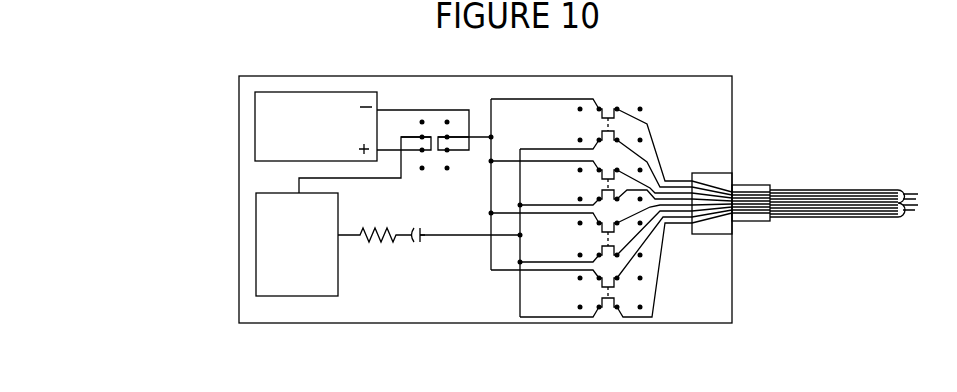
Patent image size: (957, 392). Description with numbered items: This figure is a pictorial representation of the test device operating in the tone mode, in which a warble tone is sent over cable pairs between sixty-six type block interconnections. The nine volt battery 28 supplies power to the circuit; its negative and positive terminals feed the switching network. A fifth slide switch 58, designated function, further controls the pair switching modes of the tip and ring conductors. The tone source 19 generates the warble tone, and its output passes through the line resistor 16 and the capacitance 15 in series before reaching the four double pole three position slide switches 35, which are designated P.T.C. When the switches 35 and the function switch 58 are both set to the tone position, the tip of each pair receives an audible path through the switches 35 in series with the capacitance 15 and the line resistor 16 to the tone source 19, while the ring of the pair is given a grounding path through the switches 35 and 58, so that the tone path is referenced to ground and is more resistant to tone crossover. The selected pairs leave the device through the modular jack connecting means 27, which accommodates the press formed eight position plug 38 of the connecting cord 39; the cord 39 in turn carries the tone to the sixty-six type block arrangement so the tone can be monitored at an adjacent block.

The nine volt battery 28 is at (333, 88).
The fifth slide switch 58 is at (418, 172).
The tone source 19 is at (250, 238).
The line resistor 16 is at (366, 248).
The capacitance 15 is at (414, 250).
The double pole three position slide switches 35 is at (634, 98).
The modular jack connecting means 27 is at (713, 165).
The press formed eight position plug 38 is at (767, 174).
The connecting cord 39 is at (850, 180).